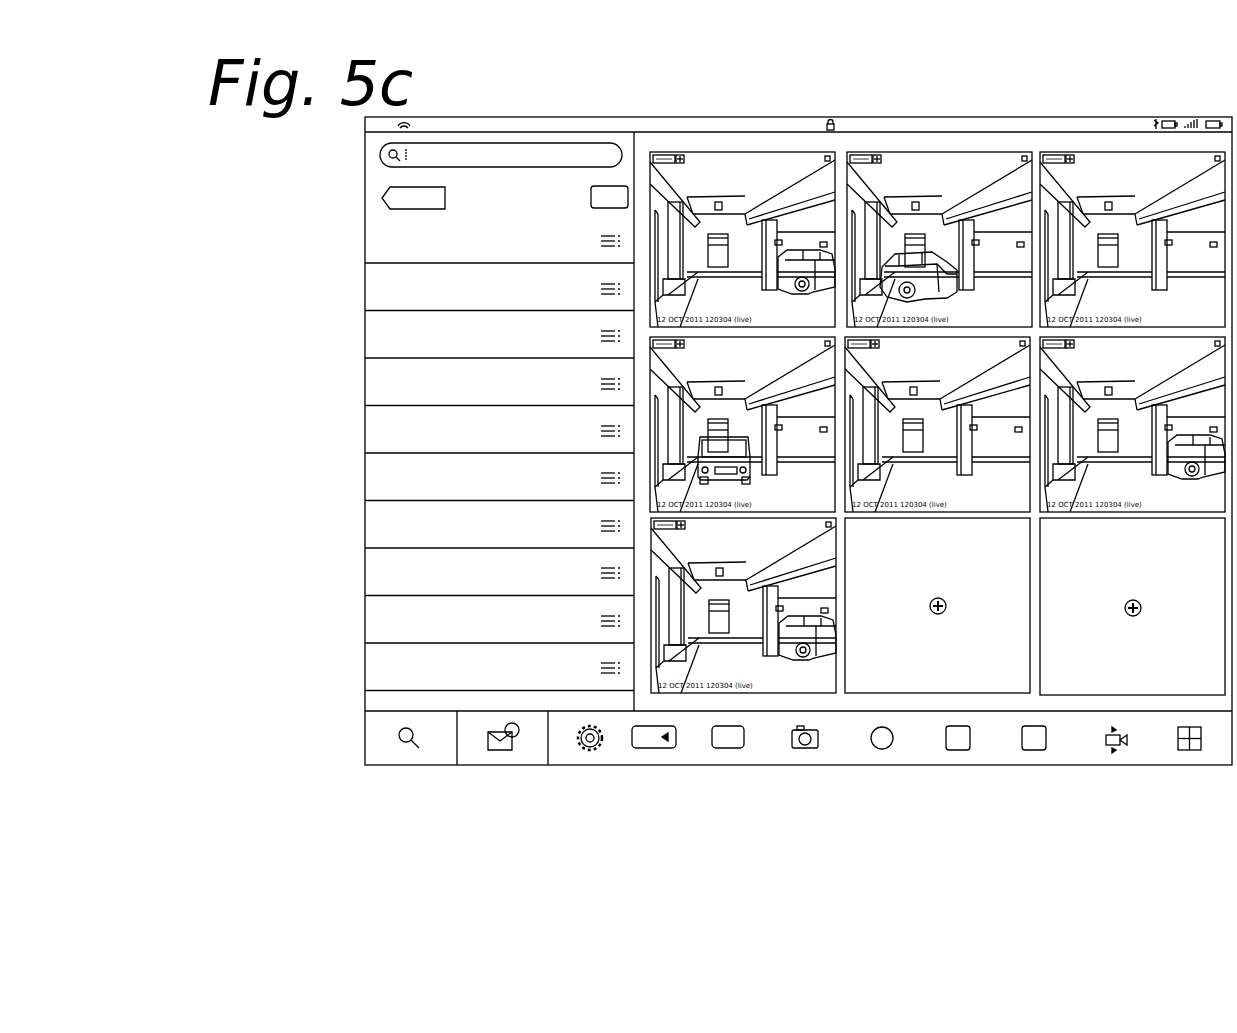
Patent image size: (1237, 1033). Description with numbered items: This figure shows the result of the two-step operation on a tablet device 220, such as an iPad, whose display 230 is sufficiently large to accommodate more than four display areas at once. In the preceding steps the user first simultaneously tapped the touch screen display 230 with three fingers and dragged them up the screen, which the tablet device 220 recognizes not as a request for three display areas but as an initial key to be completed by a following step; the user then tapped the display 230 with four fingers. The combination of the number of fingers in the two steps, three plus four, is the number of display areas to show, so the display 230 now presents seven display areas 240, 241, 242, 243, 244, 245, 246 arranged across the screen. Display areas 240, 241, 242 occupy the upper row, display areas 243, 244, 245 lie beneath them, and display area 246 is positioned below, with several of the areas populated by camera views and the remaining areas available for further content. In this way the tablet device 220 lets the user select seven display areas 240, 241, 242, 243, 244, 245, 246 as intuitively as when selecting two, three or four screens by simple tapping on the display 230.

The tablet device 220 is at (338, 610).
The display 230 is at (876, 148).
The display area 240 is at (713, 148).
The display area 241 is at (947, 148).
The display area 242 is at (1118, 148).
The display area 243 is at (845, 518).
The display area 244 is at (973, 510).
The display area 245 is at (1153, 510).
The display area 246 is at (845, 681).